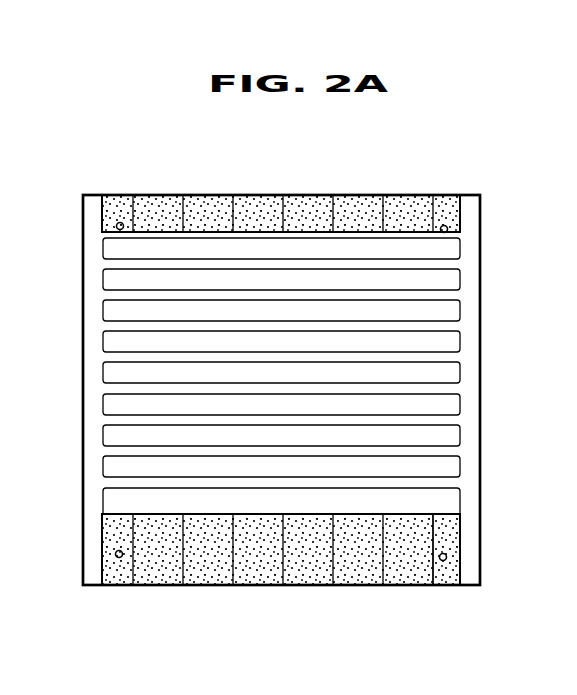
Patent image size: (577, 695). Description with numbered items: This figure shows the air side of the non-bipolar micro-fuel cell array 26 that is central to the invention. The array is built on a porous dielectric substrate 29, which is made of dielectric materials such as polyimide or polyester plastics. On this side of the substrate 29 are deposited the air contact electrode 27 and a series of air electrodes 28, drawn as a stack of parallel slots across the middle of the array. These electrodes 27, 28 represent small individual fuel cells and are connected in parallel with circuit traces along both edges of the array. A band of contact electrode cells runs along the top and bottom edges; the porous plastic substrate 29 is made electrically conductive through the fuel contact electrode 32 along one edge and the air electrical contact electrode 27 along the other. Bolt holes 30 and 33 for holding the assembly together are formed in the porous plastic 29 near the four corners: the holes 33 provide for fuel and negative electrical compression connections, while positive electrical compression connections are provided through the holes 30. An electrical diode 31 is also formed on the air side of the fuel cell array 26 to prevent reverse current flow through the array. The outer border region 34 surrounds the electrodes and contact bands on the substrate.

The non-bipolar micro-fuel cell array 26 is at (297, 377).
The air contact electrode 27 is at (172, 548).
The air electrodes 28 is at (252, 480).
The porous dielectric substrate 29 is at (85, 586).
The bolt holes 30 is at (119, 558).
The electrical diode 31 is at (452, 531).
The fuel contact electrode 32 is at (376, 210).
The bolt holes 33 is at (120, 222).
The border frame 34 is at (94, 230).